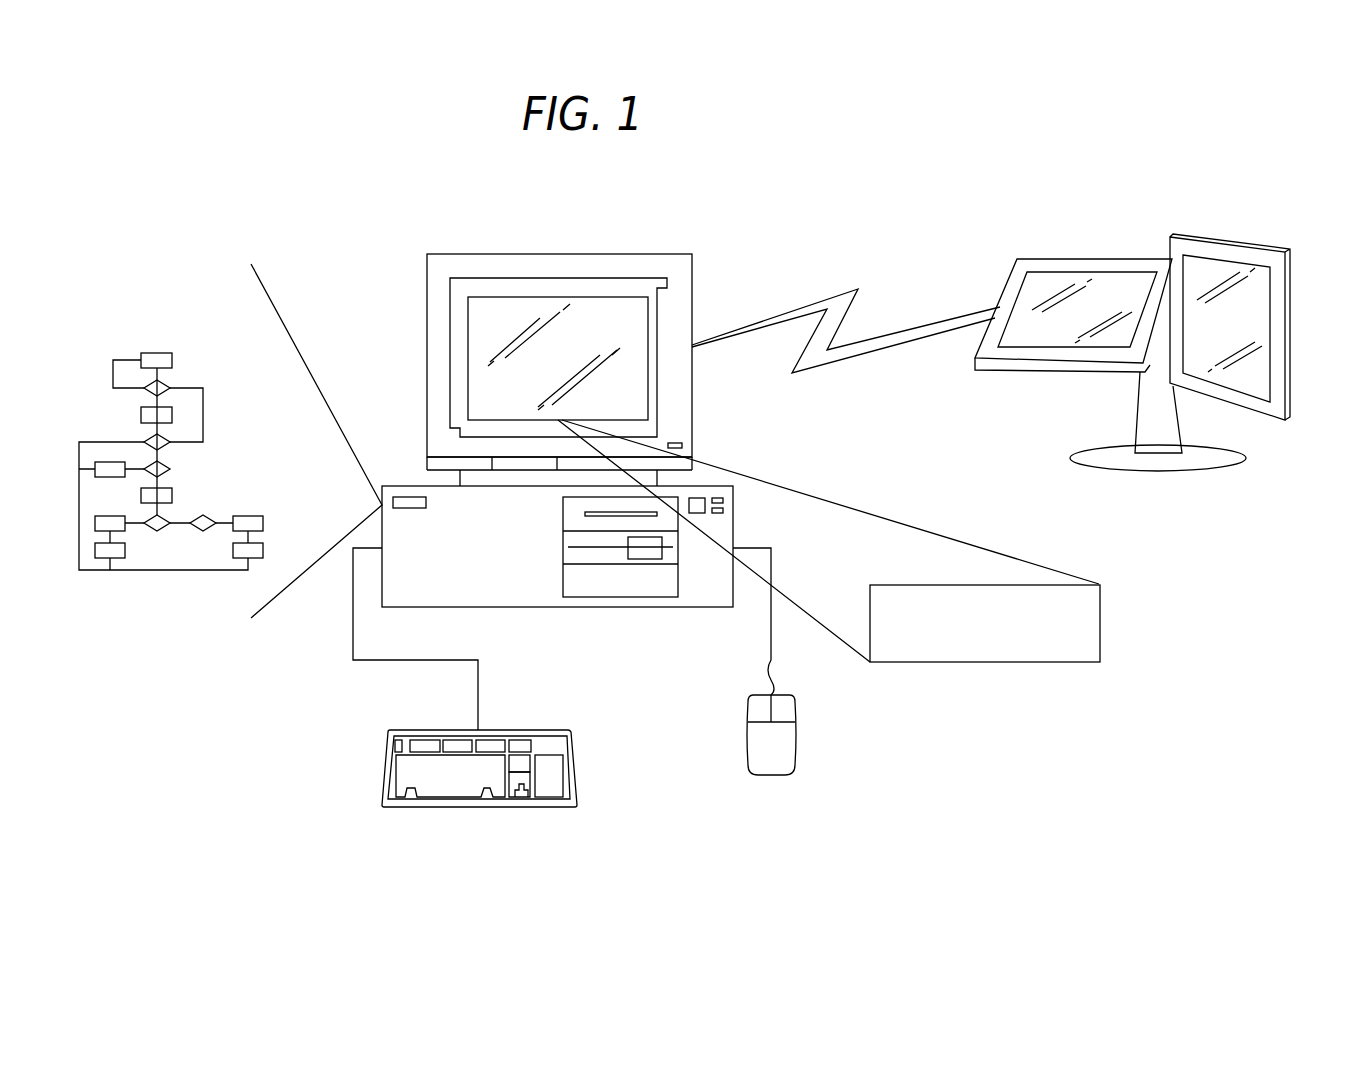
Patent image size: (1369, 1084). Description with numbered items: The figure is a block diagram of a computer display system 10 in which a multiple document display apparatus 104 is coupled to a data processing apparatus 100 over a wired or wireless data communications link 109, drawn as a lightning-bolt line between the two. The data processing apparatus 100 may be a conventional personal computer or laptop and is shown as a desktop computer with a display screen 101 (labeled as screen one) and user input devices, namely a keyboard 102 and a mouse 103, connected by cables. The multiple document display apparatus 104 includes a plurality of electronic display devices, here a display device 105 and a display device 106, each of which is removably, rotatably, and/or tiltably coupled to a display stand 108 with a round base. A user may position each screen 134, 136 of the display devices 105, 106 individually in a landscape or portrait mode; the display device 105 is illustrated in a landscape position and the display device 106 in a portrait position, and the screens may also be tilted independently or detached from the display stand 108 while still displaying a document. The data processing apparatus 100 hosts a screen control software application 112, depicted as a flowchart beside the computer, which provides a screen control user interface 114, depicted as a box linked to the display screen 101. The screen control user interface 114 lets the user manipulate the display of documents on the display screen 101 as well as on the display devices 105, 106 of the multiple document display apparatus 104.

The computer display system 10 is at (210, 813).
The data processing apparatus 100 is at (745, 221).
The display screen 101 is at (542, 278).
The keyboard 102 is at (538, 730).
The mouse 103 is at (795, 737).
The multiple document display apparatus 104 is at (1138, 307).
The display device 105 is at (1045, 287).
The display device 106 is at (1264, 315).
The display stand 108 is at (1067, 378).
The data communications link 109 is at (875, 338).
The screen control software application 112 is at (160, 353).
The screen control user interface 114 is at (1100, 600).
The screen 134 is at (1000, 343).
The screen 136 is at (1252, 379).